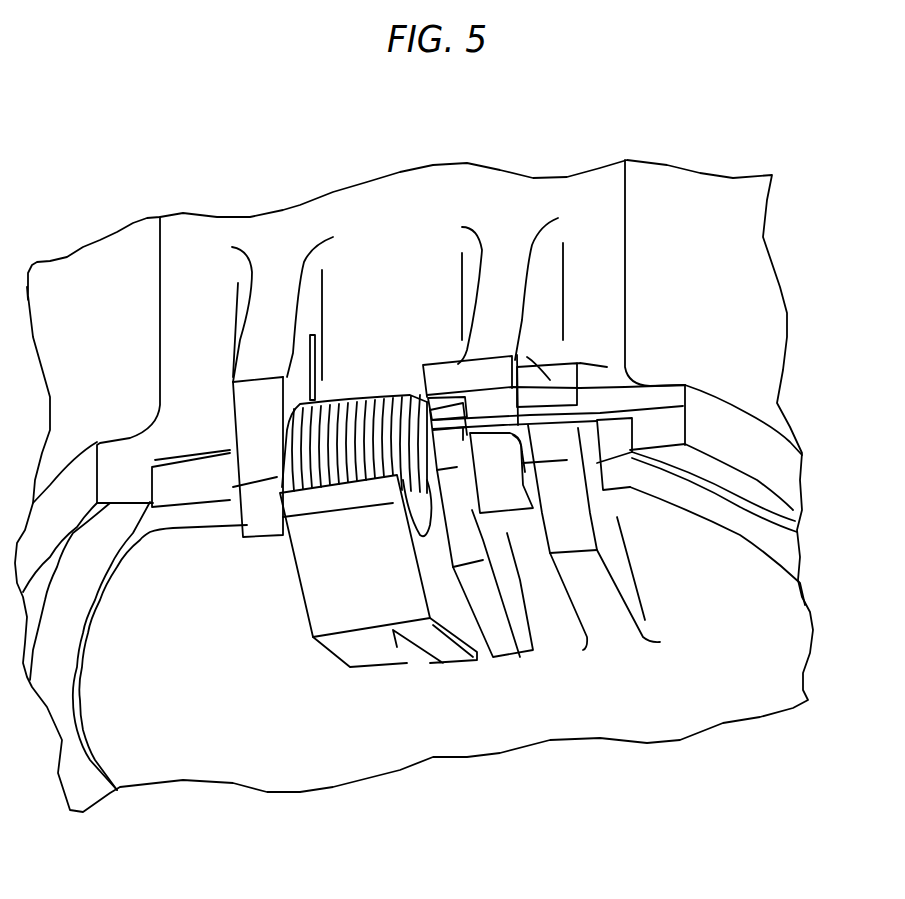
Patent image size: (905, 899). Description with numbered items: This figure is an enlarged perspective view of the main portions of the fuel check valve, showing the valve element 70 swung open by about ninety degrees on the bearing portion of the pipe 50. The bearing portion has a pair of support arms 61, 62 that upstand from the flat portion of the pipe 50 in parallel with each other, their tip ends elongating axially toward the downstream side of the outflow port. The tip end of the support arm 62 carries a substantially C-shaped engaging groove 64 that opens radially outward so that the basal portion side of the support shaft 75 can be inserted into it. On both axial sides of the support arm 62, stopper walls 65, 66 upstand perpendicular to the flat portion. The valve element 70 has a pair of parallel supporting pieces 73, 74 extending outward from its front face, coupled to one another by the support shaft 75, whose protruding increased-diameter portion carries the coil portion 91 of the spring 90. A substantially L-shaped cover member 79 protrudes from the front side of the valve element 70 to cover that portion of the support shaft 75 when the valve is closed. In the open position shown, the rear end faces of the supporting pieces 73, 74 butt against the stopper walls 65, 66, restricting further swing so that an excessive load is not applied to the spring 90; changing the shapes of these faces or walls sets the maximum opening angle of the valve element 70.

The pipe 50 is at (729, 246).
The support arm 61 is at (280, 277).
The support arm 62 is at (513, 233).
The engaging groove 64 is at (685, 408).
The stopper wall 65 is at (552, 375).
The stopper wall 66 is at (438, 377).
The valve element 70 is at (295, 786).
The supporting piece 73 is at (610, 620).
The supporting piece 74 is at (505, 633).
The support shaft 75 is at (633, 425).
The cover member 79 is at (327, 590).
The spring 90 is at (387, 364).
The coil portion 91 is at (352, 400).